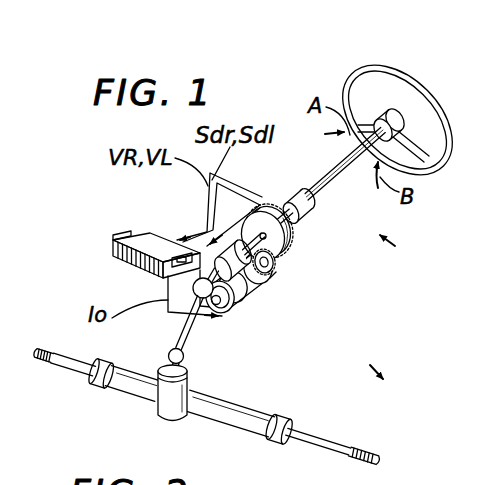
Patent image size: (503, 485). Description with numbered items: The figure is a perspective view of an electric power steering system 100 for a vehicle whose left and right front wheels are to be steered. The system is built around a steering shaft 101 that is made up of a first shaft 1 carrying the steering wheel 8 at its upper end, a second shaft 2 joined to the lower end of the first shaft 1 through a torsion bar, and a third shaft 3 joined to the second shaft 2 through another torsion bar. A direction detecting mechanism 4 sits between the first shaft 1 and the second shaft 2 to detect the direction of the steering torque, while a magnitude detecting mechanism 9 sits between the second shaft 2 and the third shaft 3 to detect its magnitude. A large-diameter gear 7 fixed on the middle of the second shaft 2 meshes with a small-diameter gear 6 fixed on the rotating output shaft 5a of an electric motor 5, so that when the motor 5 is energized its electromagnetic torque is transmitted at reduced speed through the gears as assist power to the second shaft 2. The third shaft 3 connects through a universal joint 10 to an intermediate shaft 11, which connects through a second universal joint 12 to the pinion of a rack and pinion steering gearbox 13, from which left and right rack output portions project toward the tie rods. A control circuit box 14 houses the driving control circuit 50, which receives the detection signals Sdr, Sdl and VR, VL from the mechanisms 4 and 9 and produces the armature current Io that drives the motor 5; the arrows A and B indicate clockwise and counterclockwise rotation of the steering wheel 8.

The first shaft 1 is at (333, 173).
The second shaft 2 is at (286, 236).
The third shaft 3 is at (168, 287).
The direction detecting mechanism 4 is at (290, 196).
The electric motor 5 is at (243, 306).
The rotating output shaft 5a is at (272, 278).
The small-diameter gear 6 is at (273, 268).
The large-diameter gear 7 is at (289, 250).
The steering wheel 8 is at (433, 98).
The magnitude detecting mechanism 9 is at (250, 292).
The universal joint 10 is at (212, 300).
The intermediate shaft 11 is at (184, 335).
The universal joint 12 is at (185, 360).
The steering gearbox 13 is at (206, 406).
The control circuit box 14 is at (152, 233).
The driving control circuit 50 is at (152, 236).
The electric power steering system 100 is at (383, 379).
The steering shaft 101 is at (395, 246).